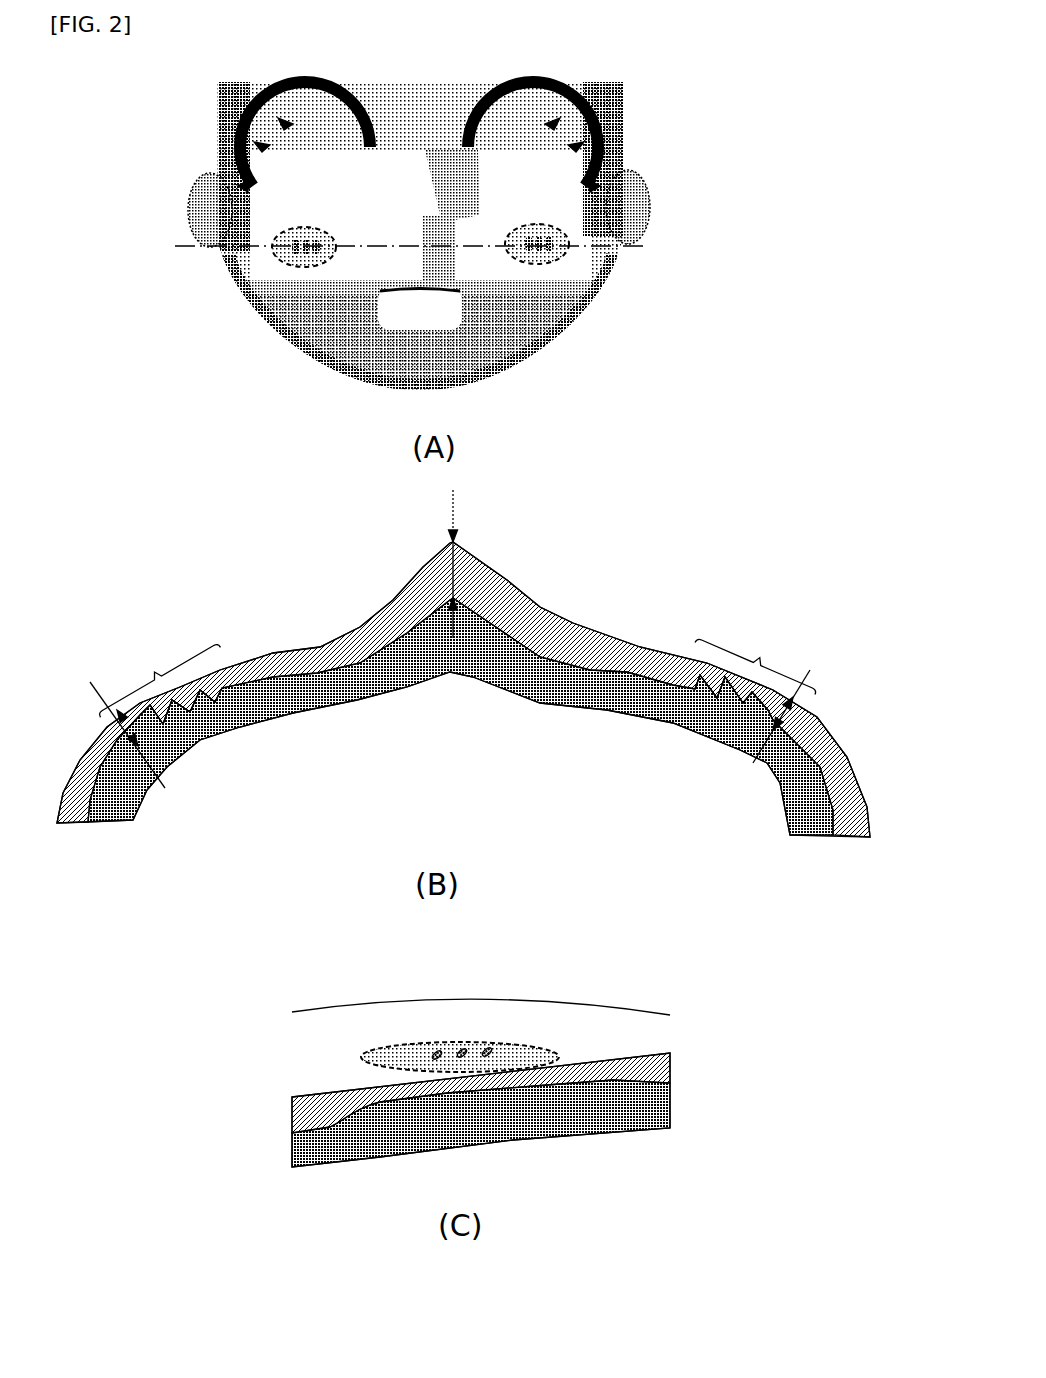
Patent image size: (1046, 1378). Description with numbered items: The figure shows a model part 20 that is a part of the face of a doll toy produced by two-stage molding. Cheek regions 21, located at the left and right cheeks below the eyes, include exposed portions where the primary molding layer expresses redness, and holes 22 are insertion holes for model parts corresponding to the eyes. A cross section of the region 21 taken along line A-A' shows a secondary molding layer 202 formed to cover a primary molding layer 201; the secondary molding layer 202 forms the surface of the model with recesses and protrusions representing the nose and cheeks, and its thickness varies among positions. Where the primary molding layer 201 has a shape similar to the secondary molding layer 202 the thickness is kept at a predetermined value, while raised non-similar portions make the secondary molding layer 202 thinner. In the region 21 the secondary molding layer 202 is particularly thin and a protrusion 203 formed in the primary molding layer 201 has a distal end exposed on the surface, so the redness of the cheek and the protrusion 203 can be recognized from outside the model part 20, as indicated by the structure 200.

The model part 20 is at (667, 193).
The cheek region 21 is at (307, 270).
The hole 22 is at (318, 153).
The skin structure 200 is at (302, 963).
The primary molding layer 201 is at (620, 698).
The secondary molding layer 202 is at (547, 640).
The protrusion 203 is at (177, 710).